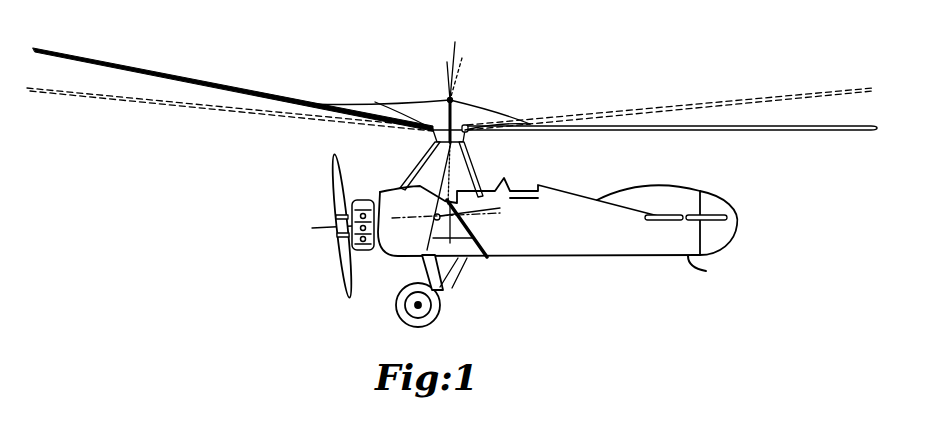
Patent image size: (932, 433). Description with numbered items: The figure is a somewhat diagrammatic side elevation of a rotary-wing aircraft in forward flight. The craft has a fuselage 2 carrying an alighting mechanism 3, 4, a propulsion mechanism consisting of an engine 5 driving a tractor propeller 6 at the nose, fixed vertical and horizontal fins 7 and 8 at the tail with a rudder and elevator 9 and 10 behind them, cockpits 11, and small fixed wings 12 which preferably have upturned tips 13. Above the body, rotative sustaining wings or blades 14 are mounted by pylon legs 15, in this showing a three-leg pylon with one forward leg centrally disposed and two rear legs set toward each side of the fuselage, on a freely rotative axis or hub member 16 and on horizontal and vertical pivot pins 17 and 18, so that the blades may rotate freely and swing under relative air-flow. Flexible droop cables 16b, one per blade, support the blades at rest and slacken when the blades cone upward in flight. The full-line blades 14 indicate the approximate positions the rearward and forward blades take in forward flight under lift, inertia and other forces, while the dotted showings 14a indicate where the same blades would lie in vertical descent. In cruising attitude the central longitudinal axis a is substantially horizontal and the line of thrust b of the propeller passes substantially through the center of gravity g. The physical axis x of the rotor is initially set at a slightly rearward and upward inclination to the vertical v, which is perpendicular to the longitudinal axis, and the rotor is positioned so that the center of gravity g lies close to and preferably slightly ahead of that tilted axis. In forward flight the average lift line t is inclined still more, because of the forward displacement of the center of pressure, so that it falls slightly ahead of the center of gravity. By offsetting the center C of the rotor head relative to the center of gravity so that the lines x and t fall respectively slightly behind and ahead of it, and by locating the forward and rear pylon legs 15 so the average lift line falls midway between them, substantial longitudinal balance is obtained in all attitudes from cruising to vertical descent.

The fuselage 2 is at (550, 243).
The alighting mechanism 3 is at (431, 291).
The alighting mechanism 4 is at (705, 271).
The engine 5 is at (361, 200).
The tractor propeller 6 is at (336, 192).
The fixed vertical fin 7 is at (648, 195).
The fixed horizontal fin 8 is at (666, 219).
The rudder 9 is at (720, 205).
The elevator 10 is at (725, 220).
The cockpits 11 is at (417, 190).
The small fixed wings 12 is at (467, 250).
The upturned tips 13 is at (460, 228).
The rotative sustaining wings or blades 14 is at (200, 82).
The dotted line showing of blades 14a is at (815, 48).
The pylon legs 15 is at (426, 156).
The rotative axis or hub member 16 is at (458, 125).
The flexible droop cables 16b is at (570, 74).
The horizontal pivot pins 17 is at (445, 127).
The vertical pivot pins 18 is at (437, 128).
The center of the rotor head C is at (462, 128).
The central longitudinal axis a is at (449, 215).
The line of thrust b is at (406, 217).
The center of gravity g is at (427, 247).
The average lift line in forward flight t is at (439, 148).
The vertical line v is at (449, 153).
The physical axis of the rotor x is at (448, 130).